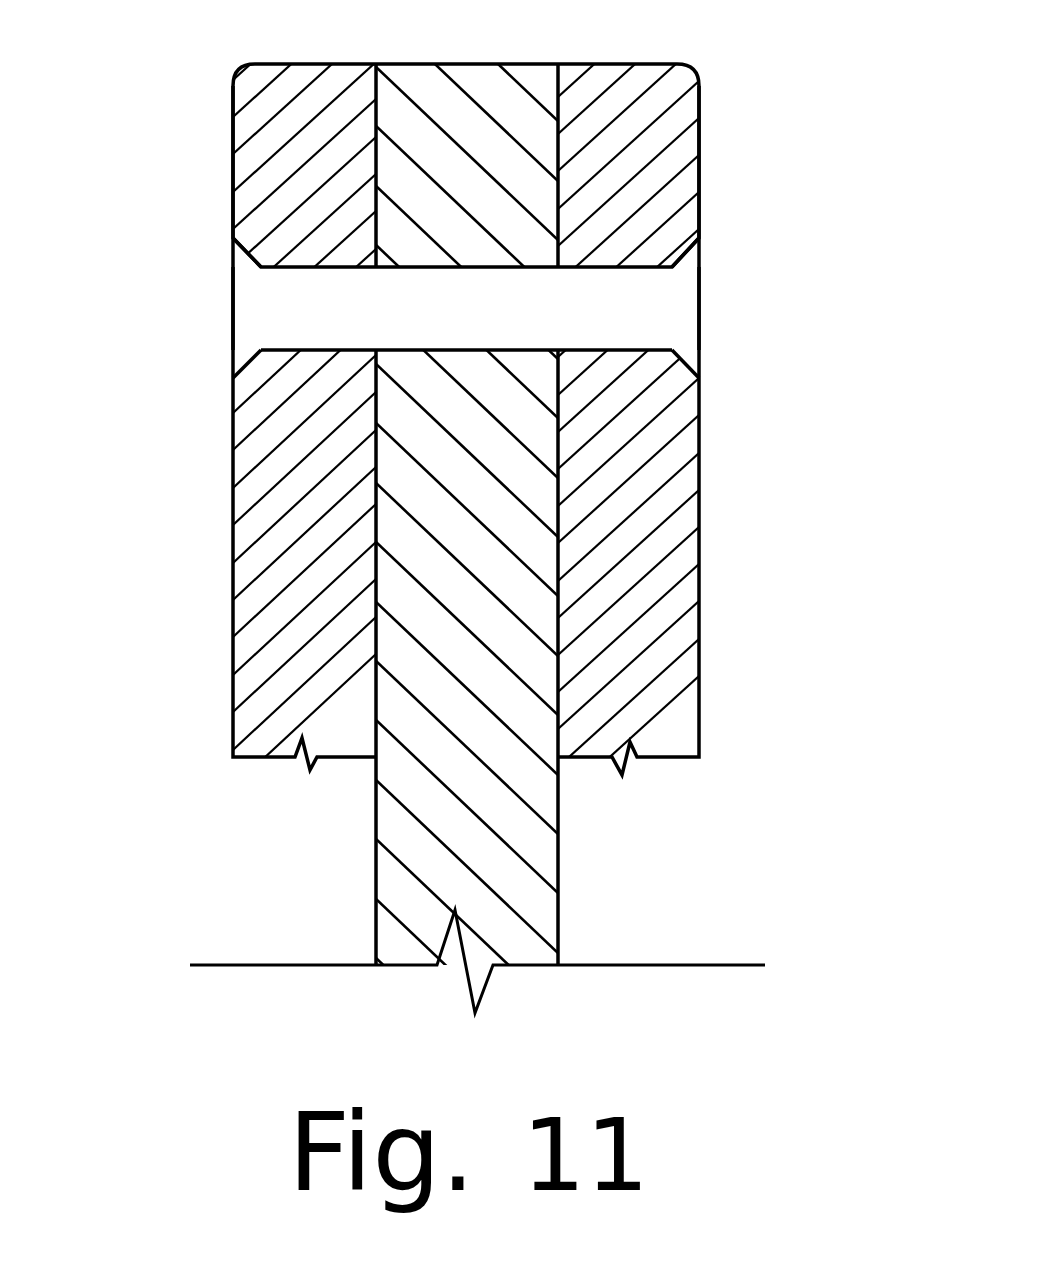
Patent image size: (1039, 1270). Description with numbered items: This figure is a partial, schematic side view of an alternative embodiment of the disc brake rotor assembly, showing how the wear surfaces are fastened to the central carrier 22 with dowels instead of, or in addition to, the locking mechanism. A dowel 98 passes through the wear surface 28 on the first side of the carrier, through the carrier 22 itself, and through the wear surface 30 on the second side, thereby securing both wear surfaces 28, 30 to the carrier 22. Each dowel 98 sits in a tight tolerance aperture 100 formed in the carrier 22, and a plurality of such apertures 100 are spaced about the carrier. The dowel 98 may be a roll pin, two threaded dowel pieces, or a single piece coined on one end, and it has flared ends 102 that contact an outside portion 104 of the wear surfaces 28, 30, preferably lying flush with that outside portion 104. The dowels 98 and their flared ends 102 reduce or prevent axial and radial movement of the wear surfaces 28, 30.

The central carrier 22 is at (512, 823).
The wear surface 28 is at (257, 582).
The wear surface 30 is at (667, 578).
The dowel 98 is at (398, 290).
The tight tolerance aperture 100 is at (394, 352).
The flared end 102 is at (268, 386).
The outside portion 104 is at (195, 310).